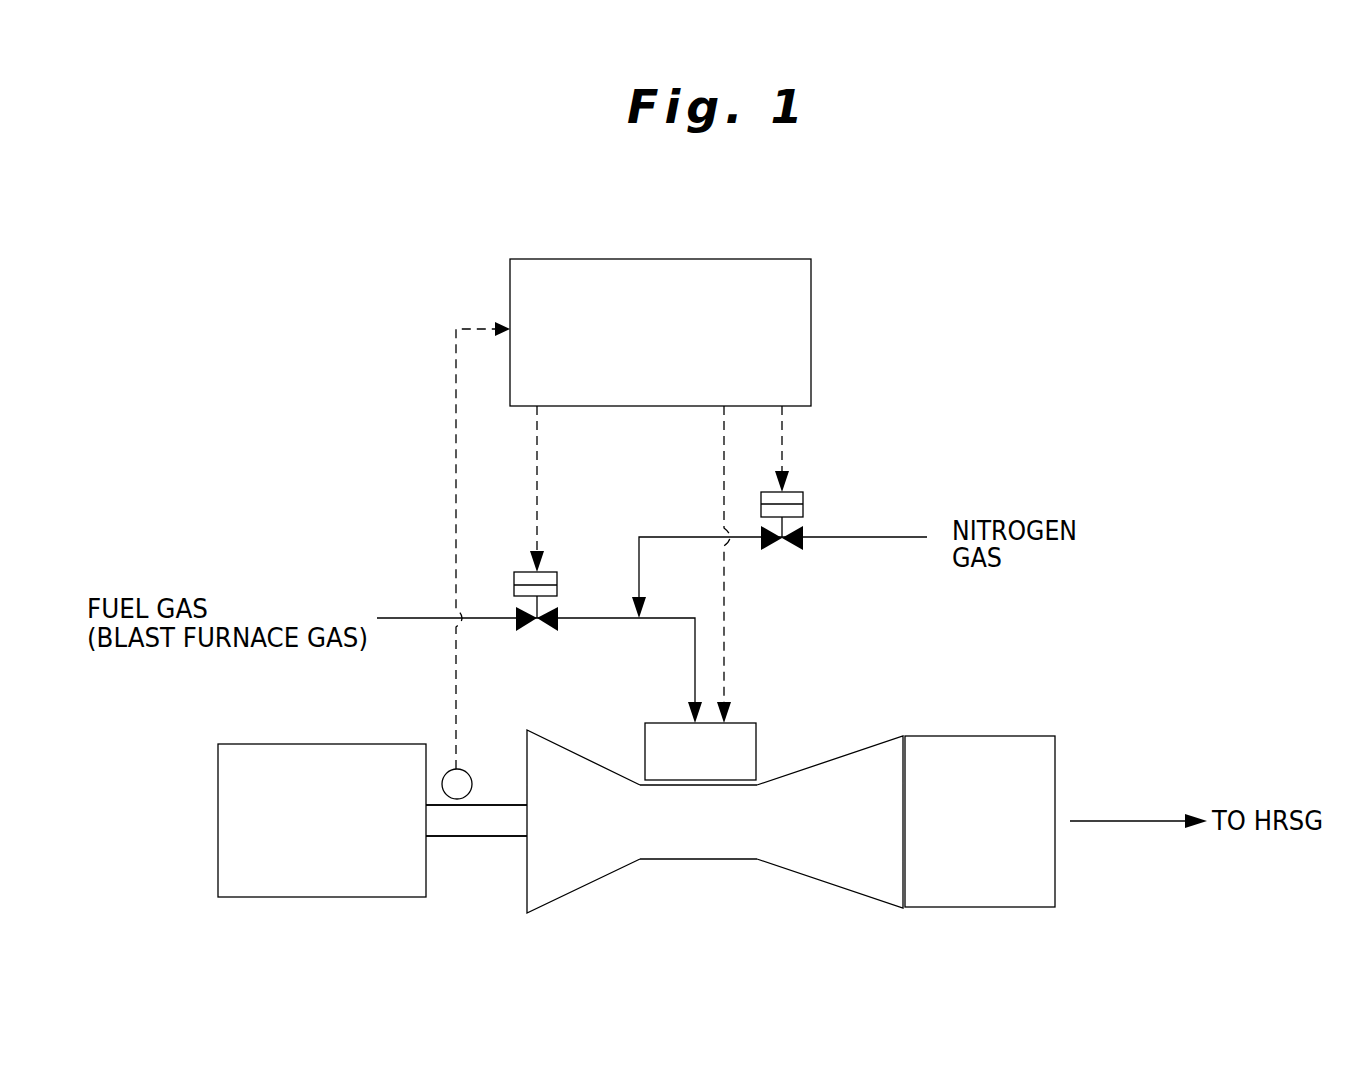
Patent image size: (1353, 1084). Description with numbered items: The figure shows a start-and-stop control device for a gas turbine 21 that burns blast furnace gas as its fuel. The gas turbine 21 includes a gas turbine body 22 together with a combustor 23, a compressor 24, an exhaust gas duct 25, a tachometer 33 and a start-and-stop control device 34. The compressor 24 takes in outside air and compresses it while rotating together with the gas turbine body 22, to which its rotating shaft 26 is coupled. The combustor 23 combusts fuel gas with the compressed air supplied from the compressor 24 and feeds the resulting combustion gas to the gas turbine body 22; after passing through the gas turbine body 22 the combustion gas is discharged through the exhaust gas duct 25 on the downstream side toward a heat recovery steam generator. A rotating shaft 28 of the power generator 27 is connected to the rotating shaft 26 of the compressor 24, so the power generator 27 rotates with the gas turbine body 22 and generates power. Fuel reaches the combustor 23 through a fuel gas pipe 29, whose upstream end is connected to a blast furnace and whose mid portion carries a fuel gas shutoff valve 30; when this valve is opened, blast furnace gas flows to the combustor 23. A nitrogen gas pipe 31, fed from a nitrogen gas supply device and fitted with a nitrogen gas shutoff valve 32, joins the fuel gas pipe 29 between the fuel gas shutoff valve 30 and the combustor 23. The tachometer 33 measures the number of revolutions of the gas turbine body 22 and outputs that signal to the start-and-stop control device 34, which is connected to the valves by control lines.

The gas turbine 21 is at (1040, 653).
The gas turbine body 22 is at (832, 755).
The combustor 23 is at (737, 722).
The compressor 24 is at (580, 755).
The exhaust gas duct 25 is at (983, 736).
The rotating shaft 26 is at (500, 838).
The power generator 27 is at (313, 744).
The rotating shaft 28 is at (449, 838).
The fuel gas pipe 29 is at (695, 640).
The fuel gas shutoff valve 30 is at (548, 567).
The nitrogen gas pipe 31 is at (683, 537).
The nitrogen gas shutoff valve 32 is at (803, 492).
The tachometer 33 is at (467, 772).
The start-and-stop control device 34 is at (647, 259).